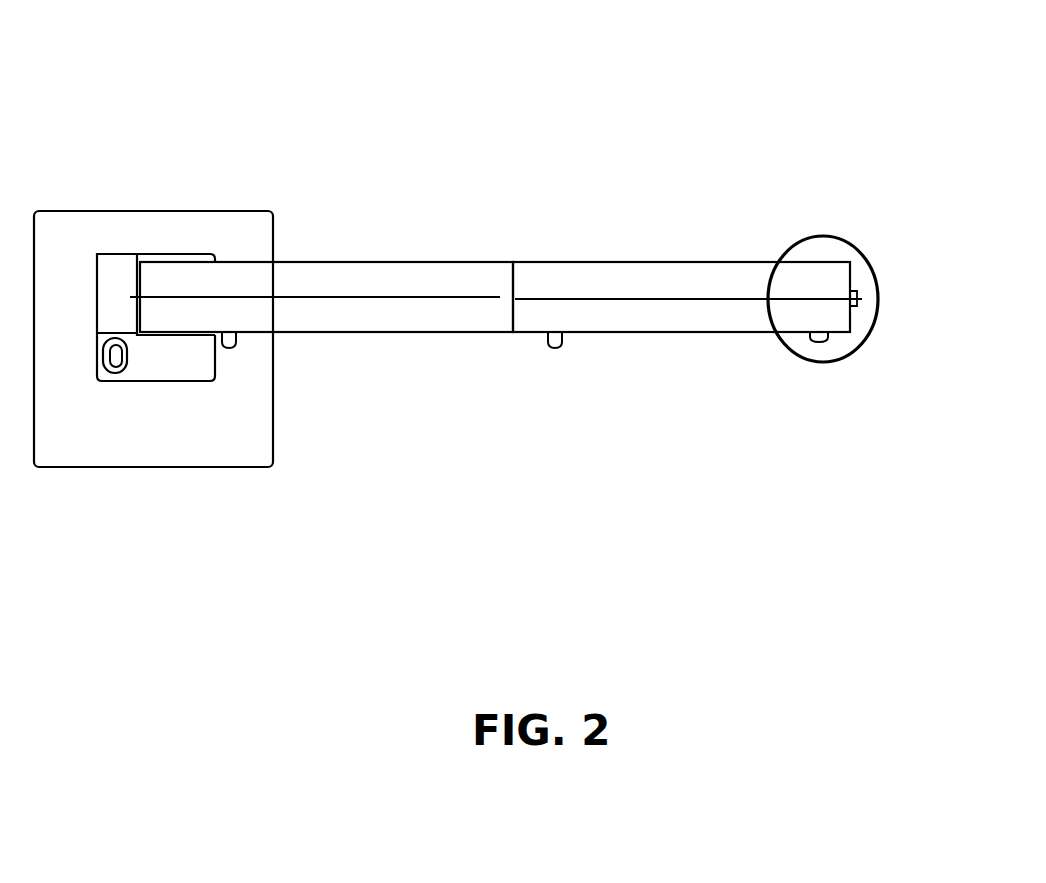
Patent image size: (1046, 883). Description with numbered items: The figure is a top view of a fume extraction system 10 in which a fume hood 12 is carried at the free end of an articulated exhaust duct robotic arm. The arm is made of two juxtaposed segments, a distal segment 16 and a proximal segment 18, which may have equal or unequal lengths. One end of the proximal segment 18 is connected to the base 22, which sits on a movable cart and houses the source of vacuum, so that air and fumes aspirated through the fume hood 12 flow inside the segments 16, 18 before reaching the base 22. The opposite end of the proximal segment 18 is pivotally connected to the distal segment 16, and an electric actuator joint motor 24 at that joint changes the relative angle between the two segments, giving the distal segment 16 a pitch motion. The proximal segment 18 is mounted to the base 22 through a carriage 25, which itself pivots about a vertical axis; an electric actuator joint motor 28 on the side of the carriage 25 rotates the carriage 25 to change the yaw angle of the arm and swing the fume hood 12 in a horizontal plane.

The fume extraction system 10 is at (731, 94).
The fume hood 12 is at (823, 336).
The distal segment 16 is at (687, 260).
The proximal segment 18 is at (321, 261).
The base 22 is at (283, 451).
The electric actuator joint motor 24 is at (519, 361).
The carriage 25 is at (183, 240).
The electric actuator joint motor 28 is at (161, 425).